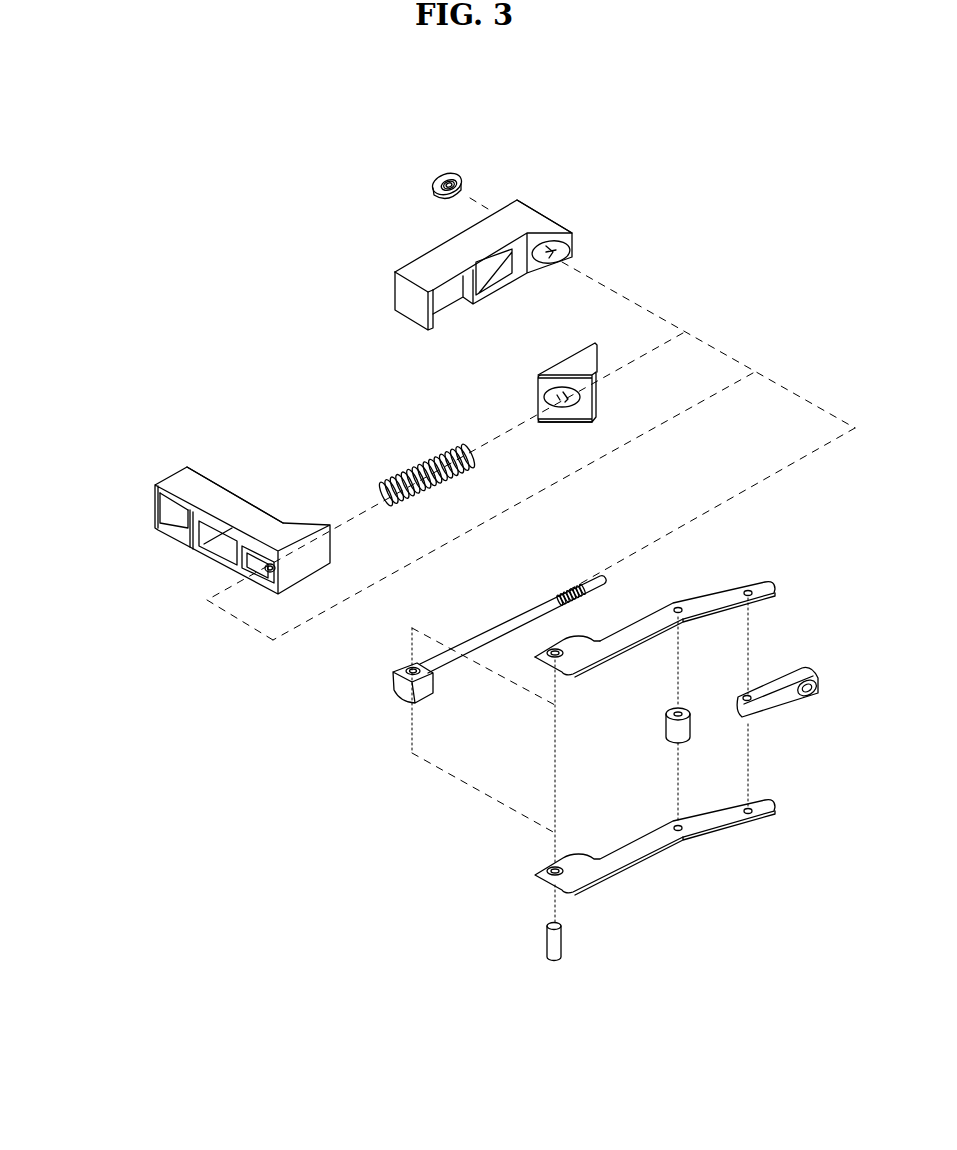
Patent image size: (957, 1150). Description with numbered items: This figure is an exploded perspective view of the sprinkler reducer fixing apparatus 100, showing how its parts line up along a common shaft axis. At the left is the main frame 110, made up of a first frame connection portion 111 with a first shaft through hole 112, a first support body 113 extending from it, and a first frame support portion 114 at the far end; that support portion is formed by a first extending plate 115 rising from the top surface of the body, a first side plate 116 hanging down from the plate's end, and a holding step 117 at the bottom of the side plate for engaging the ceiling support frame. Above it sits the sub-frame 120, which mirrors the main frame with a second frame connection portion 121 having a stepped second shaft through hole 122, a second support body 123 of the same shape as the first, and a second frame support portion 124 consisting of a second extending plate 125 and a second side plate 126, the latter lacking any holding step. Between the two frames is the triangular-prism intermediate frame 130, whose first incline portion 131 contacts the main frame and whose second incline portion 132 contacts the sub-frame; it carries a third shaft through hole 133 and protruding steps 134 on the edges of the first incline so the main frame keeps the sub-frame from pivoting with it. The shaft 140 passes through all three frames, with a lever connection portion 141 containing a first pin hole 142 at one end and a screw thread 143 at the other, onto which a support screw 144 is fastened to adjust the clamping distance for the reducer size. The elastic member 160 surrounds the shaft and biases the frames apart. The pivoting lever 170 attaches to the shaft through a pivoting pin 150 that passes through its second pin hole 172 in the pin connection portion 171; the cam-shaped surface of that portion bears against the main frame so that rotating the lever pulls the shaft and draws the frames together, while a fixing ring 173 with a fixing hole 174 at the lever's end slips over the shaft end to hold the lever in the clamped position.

The sprinkler reducer fixing apparatus 100 is at (257, 204).
The main frame 110 is at (184, 557).
The first frame connection portion 111 is at (295, 572).
The first shaft through hole 112 is at (268, 573).
The first support body 113 is at (233, 517).
The first frame support portion 114 is at (113, 495).
The first extending plate 115 is at (173, 483).
The first side plate 116 is at (157, 515).
The holding step 117 is at (177, 527).
The sub-frame 120 is at (453, 239).
The second frame connection portion 121 is at (557, 223).
The second shaft through hole 122 is at (547, 257).
The second support body 123 is at (480, 242).
The second frame support portion 124 is at (340, 302).
The second extending plate 125 is at (427, 273).
The second side plate 126 is at (434, 318).
The intermediate frame 130 is at (627, 404).
The first incline portion 131 is at (583, 413).
The second incline portion 132 is at (600, 403).
The third shaft through hole 133 is at (563, 408).
The protruding steps 134 is at (545, 410).
The shaft 140 is at (463, 673).
The lever connection portion 141 is at (420, 696).
The first pin hole 142 is at (376, 733).
The screw thread 143 is at (568, 592).
The support screw 144 is at (477, 168).
The pivoting pin 150 is at (562, 943).
The elastic member 160 is at (413, 467).
The pivoting lever 170 is at (634, 736).
The pin connection portion 171 is at (565, 675).
The second pin hole 172 is at (568, 658).
The fixing ring 173 is at (810, 710).
The fixing hole 174 is at (816, 692).